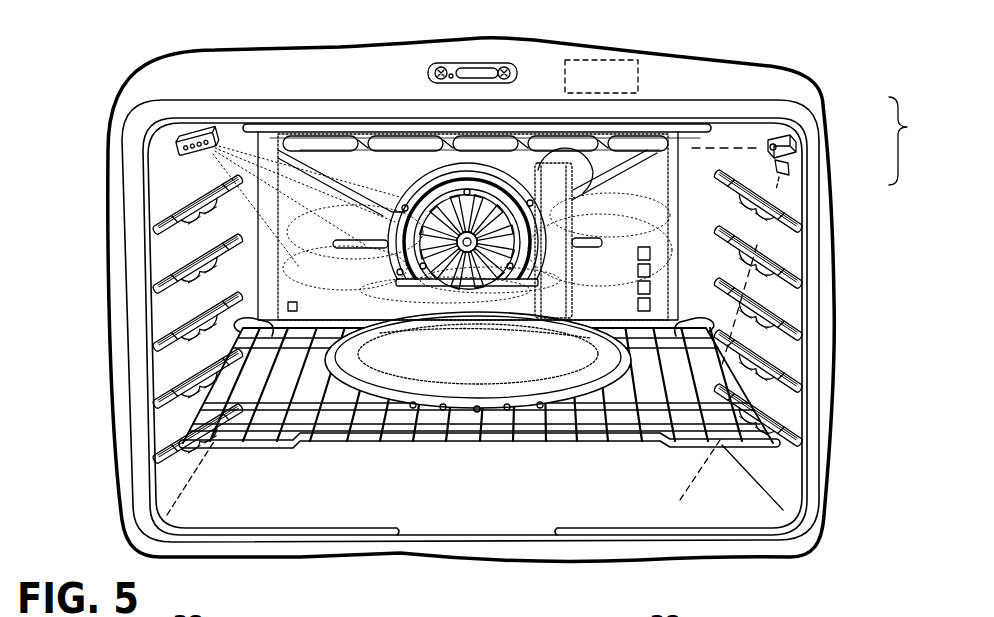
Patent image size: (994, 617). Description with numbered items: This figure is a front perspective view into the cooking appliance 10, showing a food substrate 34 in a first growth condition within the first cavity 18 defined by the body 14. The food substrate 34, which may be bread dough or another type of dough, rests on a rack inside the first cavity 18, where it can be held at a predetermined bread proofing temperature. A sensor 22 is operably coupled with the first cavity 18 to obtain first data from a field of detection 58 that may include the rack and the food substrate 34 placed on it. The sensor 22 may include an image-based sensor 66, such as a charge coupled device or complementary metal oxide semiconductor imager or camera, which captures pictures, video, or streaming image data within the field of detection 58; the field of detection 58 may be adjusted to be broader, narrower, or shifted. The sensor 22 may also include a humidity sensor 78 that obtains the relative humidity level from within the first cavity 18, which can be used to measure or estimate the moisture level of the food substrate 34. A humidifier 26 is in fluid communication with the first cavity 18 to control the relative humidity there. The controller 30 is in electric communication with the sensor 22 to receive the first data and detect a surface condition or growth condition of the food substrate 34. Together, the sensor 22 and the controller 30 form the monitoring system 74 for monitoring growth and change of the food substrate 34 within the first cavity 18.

The cooking appliance 10 is at (744, 42).
The body 14 is at (167, 112).
The first cavity 18 is at (162, 175).
The sensor 22 is at (815, 143).
The humidifier 26 is at (201, 131).
The controller 30 is at (598, 61).
The food substrate 34 is at (420, 357).
The field of detection 58 is at (757, 245).
The image-based sensor 66 is at (797, 143).
The monitoring system 74 is at (786, 110).
The humidity sensor 78 is at (791, 166).